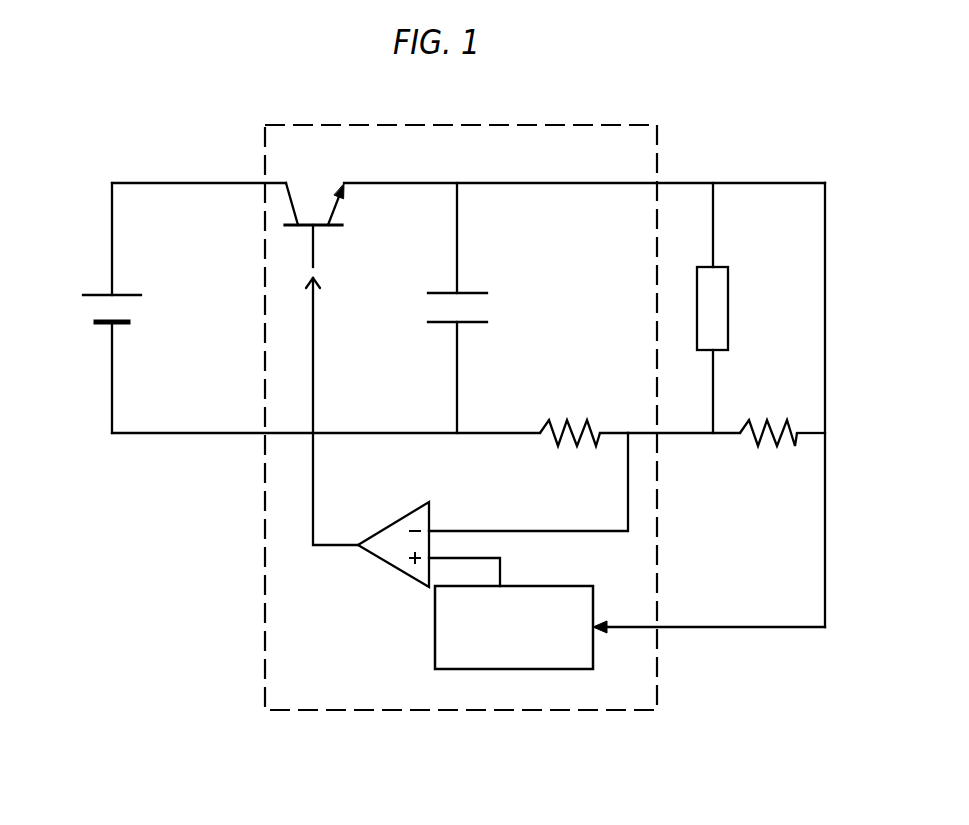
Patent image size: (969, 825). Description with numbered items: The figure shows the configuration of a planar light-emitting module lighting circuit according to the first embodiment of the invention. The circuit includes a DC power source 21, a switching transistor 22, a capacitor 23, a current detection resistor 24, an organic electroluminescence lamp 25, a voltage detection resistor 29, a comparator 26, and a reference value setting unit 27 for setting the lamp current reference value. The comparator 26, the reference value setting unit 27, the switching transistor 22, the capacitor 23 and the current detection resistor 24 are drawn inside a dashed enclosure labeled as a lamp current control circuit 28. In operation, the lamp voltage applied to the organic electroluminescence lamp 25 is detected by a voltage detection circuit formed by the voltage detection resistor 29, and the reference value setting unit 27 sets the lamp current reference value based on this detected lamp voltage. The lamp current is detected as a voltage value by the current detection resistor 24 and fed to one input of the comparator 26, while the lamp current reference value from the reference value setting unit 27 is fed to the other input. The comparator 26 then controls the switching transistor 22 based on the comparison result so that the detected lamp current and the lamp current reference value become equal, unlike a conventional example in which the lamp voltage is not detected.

The DC power source 21 is at (88, 310).
The switching transistor 22 is at (280, 210).
The capacitor 23 is at (487, 308).
The current detection resistor 24 is at (572, 393).
The organic electroluminescence lamp 25 is at (729, 278).
The comparator 26 is at (402, 517).
The reference value setting unit 27 is at (543, 583).
The lamp current control circuit 28 is at (397, 710).
The voltage detection resistor 29 is at (770, 447).